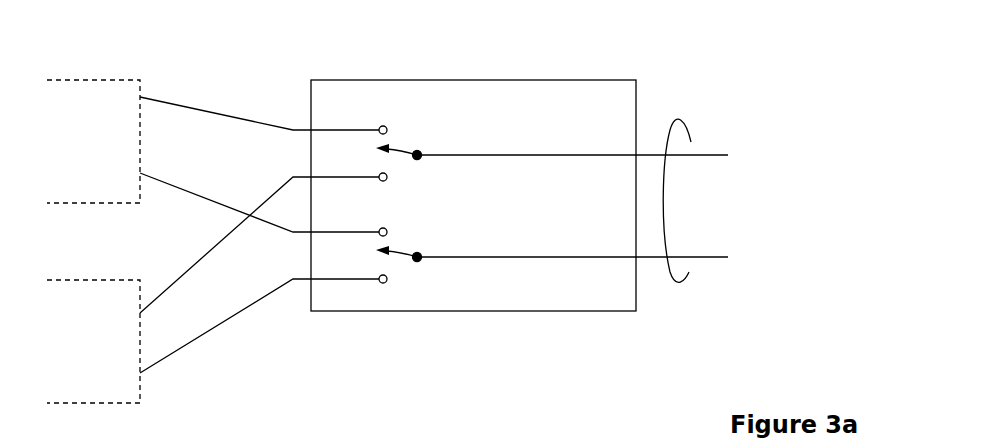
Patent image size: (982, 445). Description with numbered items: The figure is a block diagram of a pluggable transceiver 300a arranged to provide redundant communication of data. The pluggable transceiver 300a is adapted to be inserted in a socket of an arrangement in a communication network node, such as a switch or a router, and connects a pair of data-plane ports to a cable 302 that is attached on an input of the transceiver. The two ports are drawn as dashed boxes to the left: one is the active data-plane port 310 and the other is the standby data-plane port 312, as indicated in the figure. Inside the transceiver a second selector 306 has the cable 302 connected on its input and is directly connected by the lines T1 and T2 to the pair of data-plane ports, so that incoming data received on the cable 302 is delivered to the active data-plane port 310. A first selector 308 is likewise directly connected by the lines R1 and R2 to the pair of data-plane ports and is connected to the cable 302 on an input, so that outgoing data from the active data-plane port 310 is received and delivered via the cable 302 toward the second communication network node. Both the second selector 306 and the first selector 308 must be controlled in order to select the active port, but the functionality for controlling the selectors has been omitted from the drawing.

The active unit 310 is at (110, 80).
The standby unit 312 is at (110, 280).
The pluggable transceiver 300a is at (600, 80).
The cable 302 is at (676, 117).
The second selector 306 is at (423, 192).
The first selector 308 is at (413, 285).
The direct connection from second selector to first data-plane port T1 is at (232, 112).
The direct connection from first selector to first data-plane port R1 is at (200, 193).
The direct connection from second selector to second data-plane port T2 is at (237, 227).
The direct connection from first selector to second data-plane port R2 is at (237, 320).